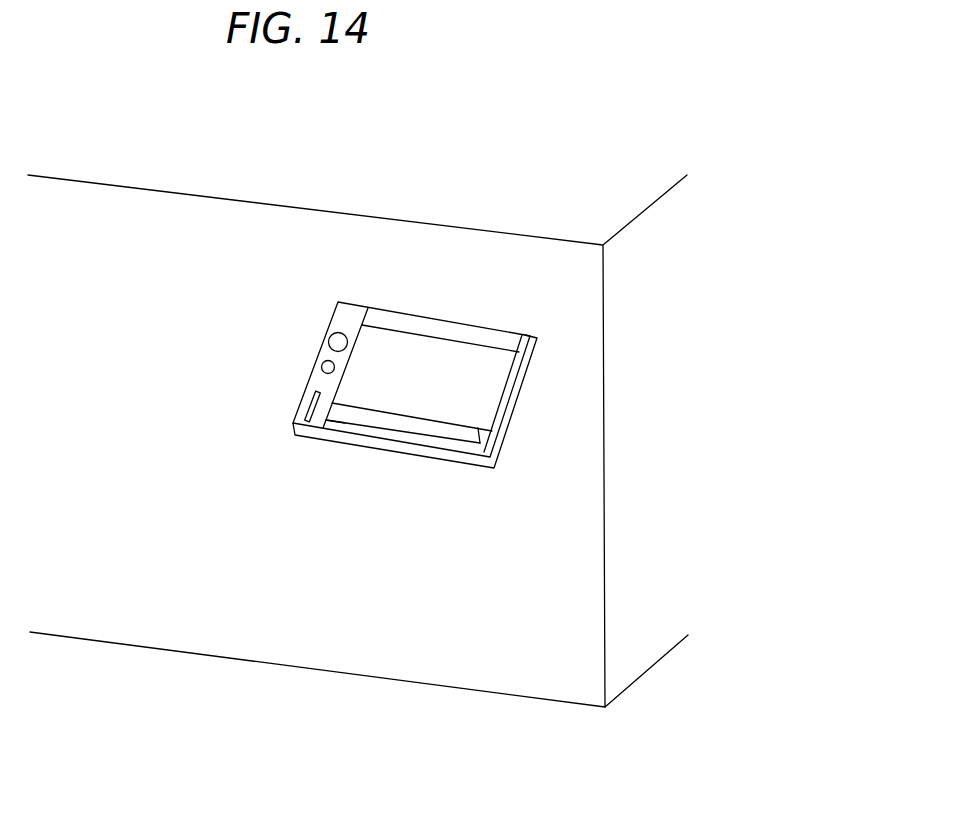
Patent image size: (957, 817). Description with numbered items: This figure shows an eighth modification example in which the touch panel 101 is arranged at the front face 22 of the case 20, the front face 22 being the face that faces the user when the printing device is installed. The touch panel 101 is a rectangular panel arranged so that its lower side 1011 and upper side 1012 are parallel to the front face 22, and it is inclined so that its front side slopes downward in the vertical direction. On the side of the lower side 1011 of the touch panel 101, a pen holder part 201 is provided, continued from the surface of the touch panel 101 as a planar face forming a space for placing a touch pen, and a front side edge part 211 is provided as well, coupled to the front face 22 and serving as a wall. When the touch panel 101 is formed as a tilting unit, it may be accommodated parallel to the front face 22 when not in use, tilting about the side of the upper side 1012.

The case 20 is at (614, 136).
The front face 22 is at (498, 680).
The touch panel 101 is at (440, 396).
The upper side 1012 is at (453, 340).
The lower side 1011 is at (480, 447).
The pen holder part 201 is at (412, 427).
The front side edge part 211 is at (345, 427).